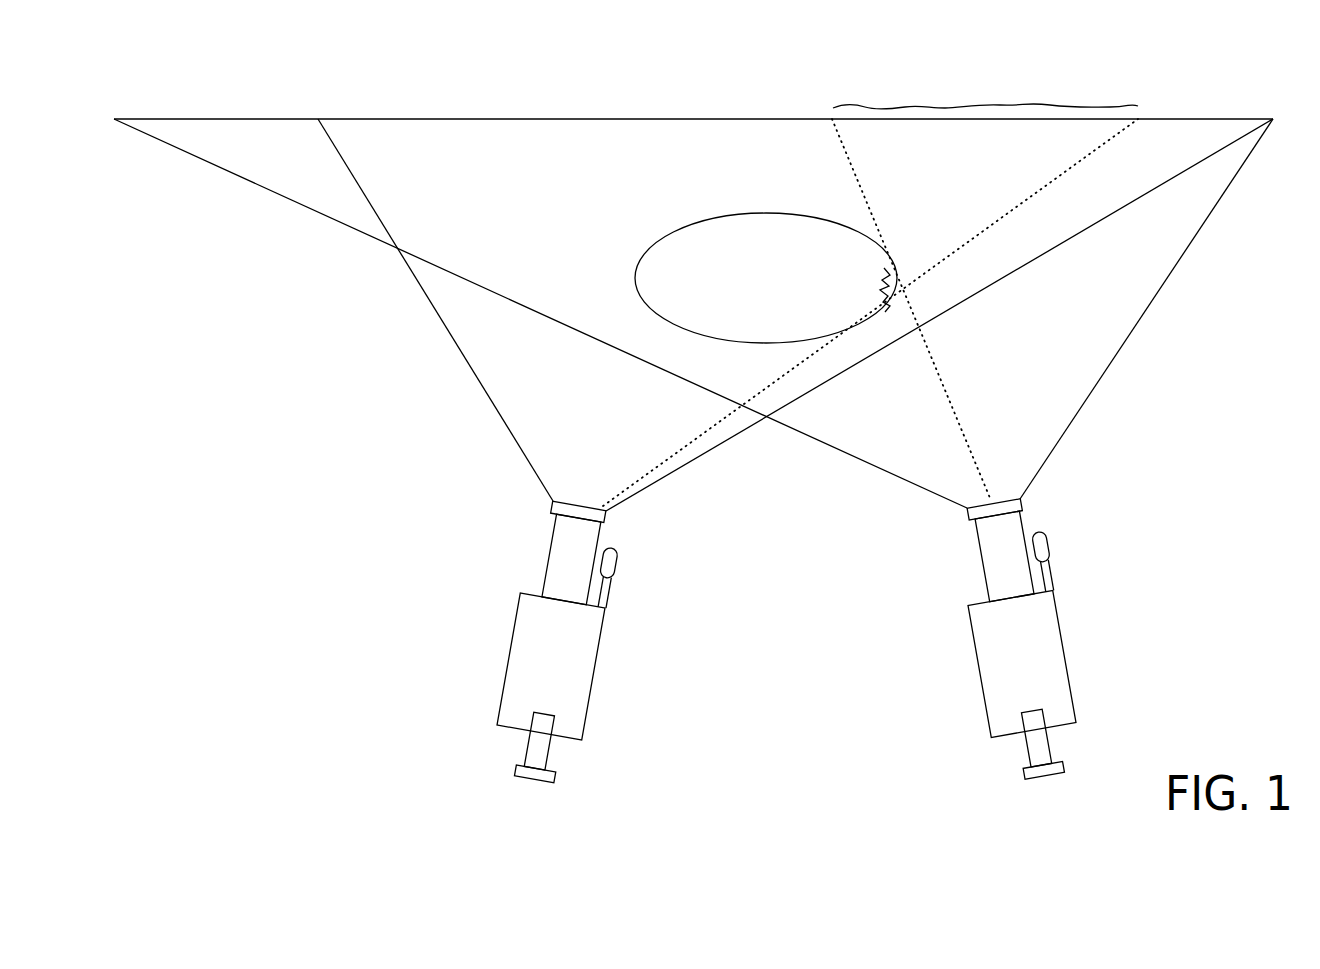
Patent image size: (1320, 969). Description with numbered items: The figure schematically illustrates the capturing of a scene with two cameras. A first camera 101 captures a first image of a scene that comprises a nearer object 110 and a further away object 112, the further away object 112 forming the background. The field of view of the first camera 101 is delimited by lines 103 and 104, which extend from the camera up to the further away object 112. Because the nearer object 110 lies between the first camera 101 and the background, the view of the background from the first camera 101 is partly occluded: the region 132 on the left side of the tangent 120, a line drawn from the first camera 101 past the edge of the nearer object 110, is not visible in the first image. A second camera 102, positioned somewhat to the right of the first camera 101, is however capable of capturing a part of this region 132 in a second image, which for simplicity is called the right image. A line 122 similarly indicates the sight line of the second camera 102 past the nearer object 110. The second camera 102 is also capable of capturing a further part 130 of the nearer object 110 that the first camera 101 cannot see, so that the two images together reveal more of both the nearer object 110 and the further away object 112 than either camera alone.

The first camera 101 is at (557, 643).
The second camera 102 is at (1019, 639).
The field of view delimiting line 103 is at (488, 394).
The field of view delimiting line 104 is at (718, 452).
The nearer object 110 is at (729, 289).
The further away object 112 is at (632, 118).
The tangent 120 is at (1012, 207).
The line of sight of second camera 122 is at (948, 392).
The further part of the nearer object 130 is at (862, 273).
The region 132 is at (1024, 86).